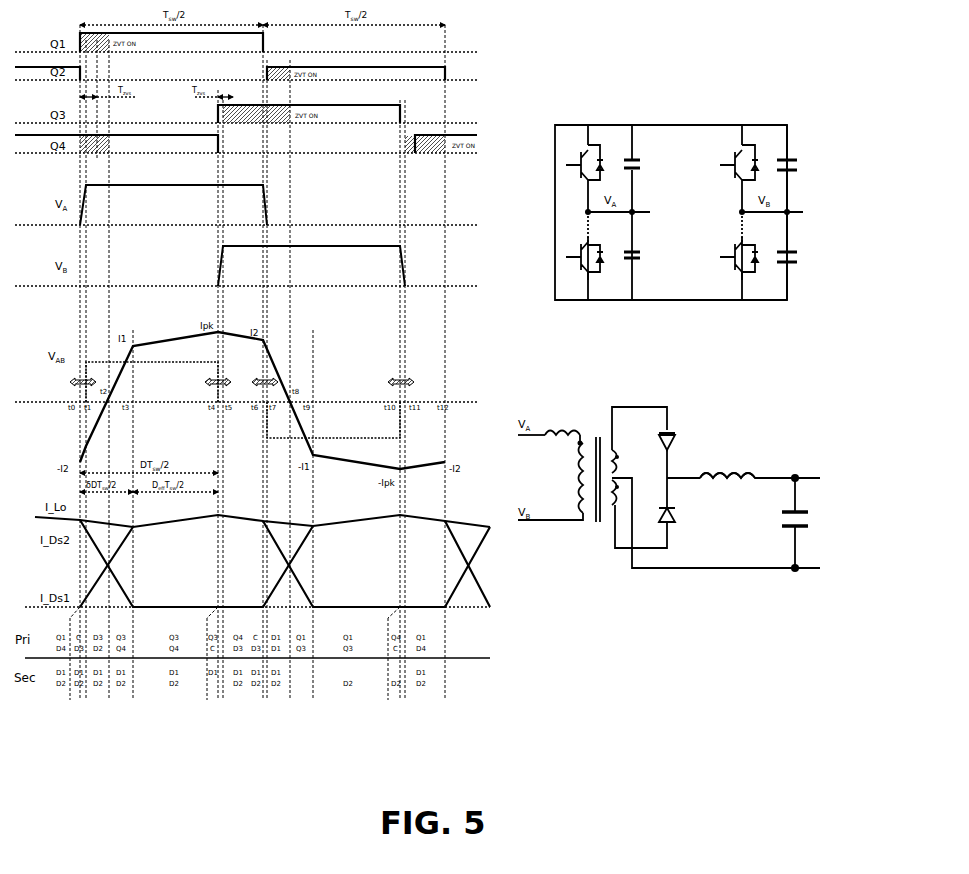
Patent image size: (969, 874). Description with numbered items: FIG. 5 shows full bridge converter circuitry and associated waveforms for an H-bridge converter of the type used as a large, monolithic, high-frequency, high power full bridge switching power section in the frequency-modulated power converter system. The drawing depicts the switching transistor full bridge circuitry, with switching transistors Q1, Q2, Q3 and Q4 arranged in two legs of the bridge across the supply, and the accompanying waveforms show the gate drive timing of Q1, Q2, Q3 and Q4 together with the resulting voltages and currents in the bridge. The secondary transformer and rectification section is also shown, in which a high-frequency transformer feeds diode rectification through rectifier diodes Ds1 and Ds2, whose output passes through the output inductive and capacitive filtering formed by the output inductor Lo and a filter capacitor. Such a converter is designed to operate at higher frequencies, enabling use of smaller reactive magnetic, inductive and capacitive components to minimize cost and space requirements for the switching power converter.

The switch Q1 is at (580, 159).
The switch Q2 is at (580, 256).
The switch Q3 is at (736, 159).
The switch Q4 is at (736, 256).
The rectifier diode Ds1 is at (681, 436).
The rectifier diode Ds2 is at (681, 520).
The output inductor Lo is at (727, 465).